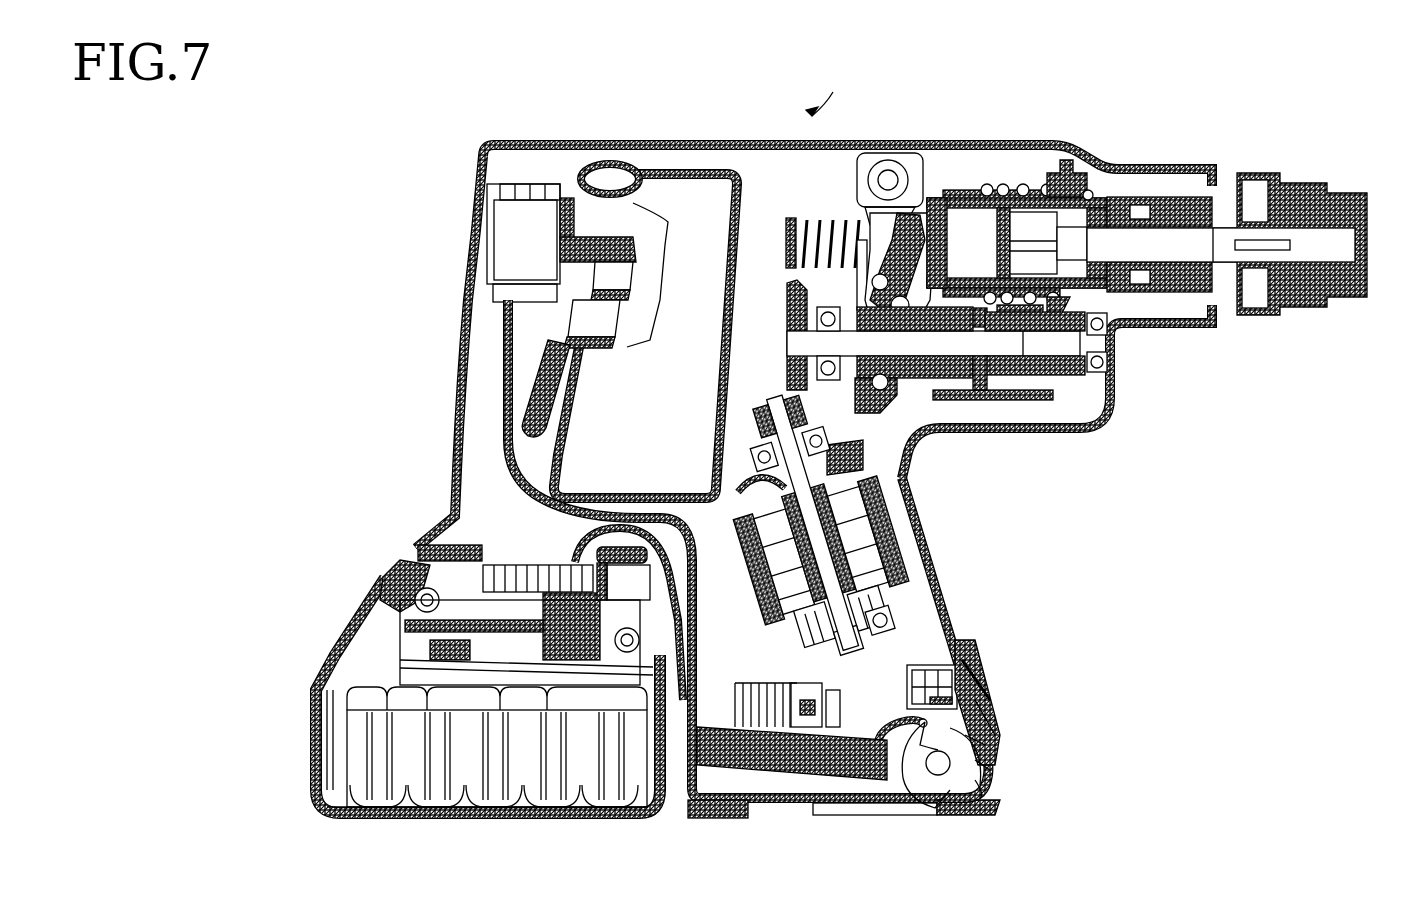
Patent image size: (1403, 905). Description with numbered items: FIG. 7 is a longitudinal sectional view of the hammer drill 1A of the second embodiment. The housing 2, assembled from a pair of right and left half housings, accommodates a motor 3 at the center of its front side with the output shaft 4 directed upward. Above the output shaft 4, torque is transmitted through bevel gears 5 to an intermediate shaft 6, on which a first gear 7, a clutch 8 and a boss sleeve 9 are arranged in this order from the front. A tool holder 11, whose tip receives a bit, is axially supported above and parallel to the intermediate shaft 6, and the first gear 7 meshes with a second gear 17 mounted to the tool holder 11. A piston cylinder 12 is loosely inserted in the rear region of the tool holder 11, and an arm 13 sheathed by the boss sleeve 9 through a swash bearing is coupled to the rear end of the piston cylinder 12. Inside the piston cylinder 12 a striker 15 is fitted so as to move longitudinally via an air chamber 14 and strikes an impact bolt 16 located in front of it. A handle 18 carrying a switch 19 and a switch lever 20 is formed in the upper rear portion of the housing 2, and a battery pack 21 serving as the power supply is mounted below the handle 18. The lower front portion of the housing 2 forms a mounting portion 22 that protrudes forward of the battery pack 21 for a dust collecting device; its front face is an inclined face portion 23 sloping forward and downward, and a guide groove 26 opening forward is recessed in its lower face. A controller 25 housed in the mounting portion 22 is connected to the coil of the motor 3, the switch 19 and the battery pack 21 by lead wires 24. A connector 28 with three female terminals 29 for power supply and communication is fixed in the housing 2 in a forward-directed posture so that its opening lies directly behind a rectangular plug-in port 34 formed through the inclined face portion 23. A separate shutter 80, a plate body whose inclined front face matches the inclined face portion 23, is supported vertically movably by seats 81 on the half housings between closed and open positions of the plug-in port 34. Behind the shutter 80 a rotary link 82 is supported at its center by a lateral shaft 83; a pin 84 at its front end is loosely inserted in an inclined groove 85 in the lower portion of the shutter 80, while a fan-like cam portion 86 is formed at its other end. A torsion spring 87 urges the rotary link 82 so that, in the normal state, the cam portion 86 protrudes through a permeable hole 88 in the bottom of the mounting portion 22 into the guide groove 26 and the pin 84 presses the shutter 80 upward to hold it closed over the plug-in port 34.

The hammer drill 1A is at (831, 90).
The housing 2 is at (768, 140).
The motor 3 is at (893, 533).
The output shaft 4 is at (820, 500).
The bevel gears 5 is at (787, 330).
The intermediate shaft 6 is at (1107, 367).
The first gear 7 is at (1070, 345).
The clutch 8 is at (967, 393).
The boss sleeve 9 is at (937, 390).
The tool holder 11 is at (1183, 163).
The piston cylinder 12 is at (1033, 190).
The arm 13 is at (907, 190).
The air chamber 14 is at (973, 243).
The striker 15 is at (1017, 237).
The impact bolt 16 is at (1107, 200).
The second gear 17 is at (1063, 160).
The handle 18 is at (482, 343).
The switch 19 is at (510, 243).
The switch lever 20 is at (640, 258).
The battery pack 21 is at (475, 777).
The mounting portion 22 is at (777, 785).
The inclined face portion 23 is at (945, 590).
The lead wires 24 is at (640, 503).
The controller 25 is at (730, 753).
The guide groove 26 is at (847, 808).
The connector 28 is at (965, 645).
The female terminals 29 is at (937, 677).
The plug-in port 34 is at (980, 690).
The shutter 80 is at (995, 712).
The seats 81 is at (967, 652).
The rotary link 82 is at (975, 800).
The lateral shaft 83 is at (953, 785).
The pin 84 is at (980, 762).
The inclined groove 85 is at (985, 737).
The cam portion 86 is at (927, 808).
The torsion spring 87 is at (910, 770).
The permeable hole 88 is at (933, 775).